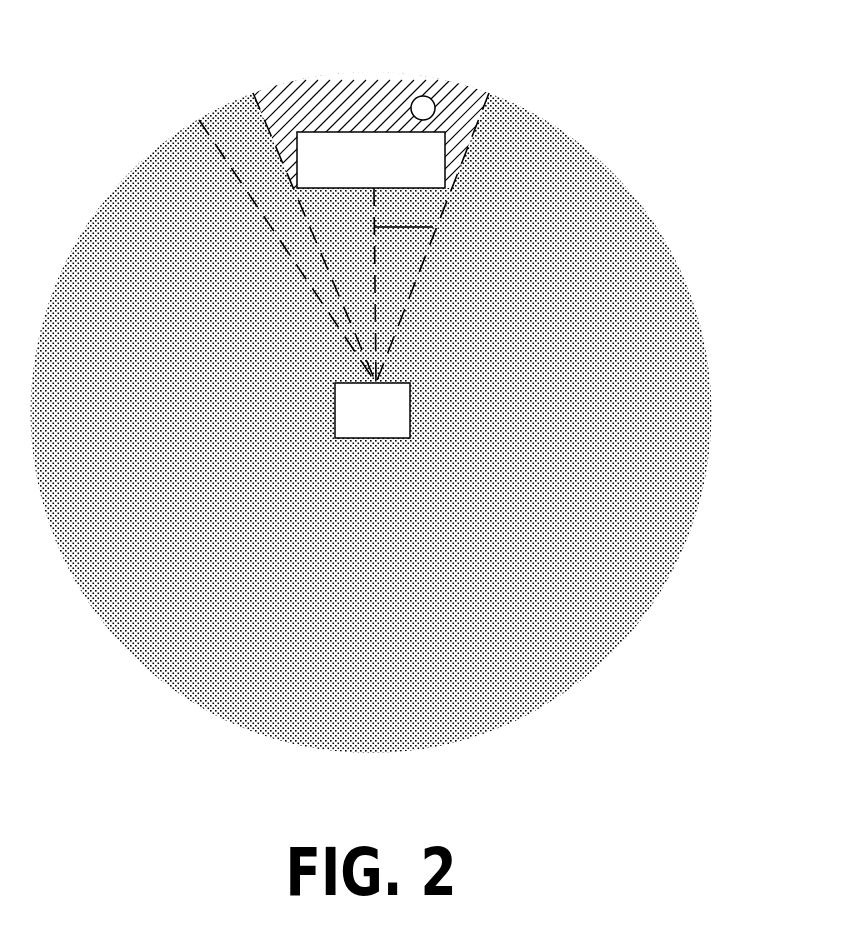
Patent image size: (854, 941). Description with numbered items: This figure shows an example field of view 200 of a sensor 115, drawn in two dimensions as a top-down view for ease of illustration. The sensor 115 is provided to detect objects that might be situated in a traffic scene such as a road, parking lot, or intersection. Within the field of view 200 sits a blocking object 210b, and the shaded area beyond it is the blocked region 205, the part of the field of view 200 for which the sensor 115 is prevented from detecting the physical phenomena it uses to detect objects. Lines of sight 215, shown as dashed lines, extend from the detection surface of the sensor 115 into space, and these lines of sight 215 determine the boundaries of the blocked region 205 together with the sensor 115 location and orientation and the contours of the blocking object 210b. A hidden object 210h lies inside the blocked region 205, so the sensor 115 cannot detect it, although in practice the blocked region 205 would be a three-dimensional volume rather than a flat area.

The field of view 200 is at (347, 606).
The blocked region 205 is at (294, 76).
The blocking object 210b is at (348, 171).
The hidden object 210h is at (437, 96).
The lines of sight 215 is at (433, 227).
The sensor 115 is at (354, 424).